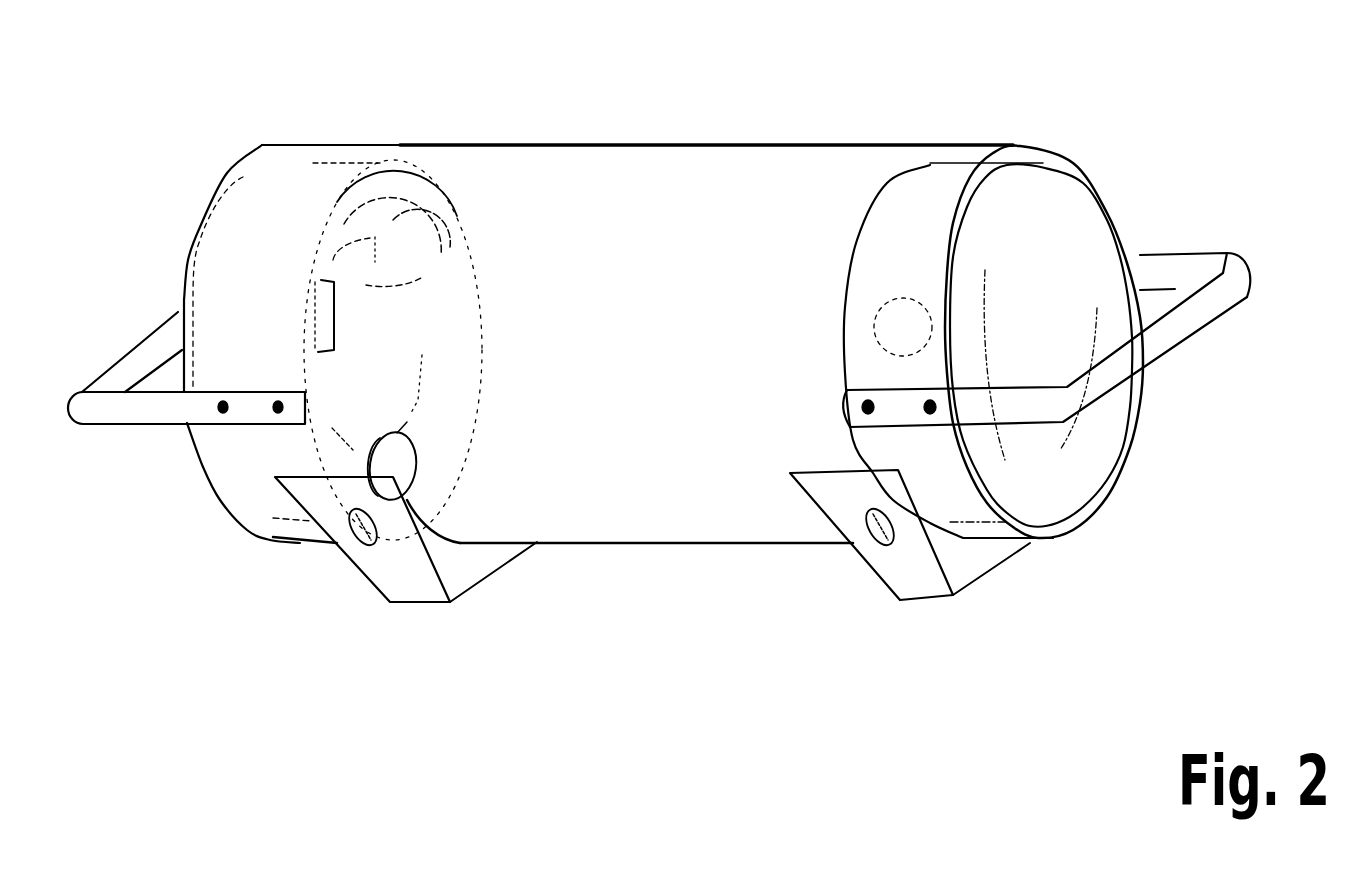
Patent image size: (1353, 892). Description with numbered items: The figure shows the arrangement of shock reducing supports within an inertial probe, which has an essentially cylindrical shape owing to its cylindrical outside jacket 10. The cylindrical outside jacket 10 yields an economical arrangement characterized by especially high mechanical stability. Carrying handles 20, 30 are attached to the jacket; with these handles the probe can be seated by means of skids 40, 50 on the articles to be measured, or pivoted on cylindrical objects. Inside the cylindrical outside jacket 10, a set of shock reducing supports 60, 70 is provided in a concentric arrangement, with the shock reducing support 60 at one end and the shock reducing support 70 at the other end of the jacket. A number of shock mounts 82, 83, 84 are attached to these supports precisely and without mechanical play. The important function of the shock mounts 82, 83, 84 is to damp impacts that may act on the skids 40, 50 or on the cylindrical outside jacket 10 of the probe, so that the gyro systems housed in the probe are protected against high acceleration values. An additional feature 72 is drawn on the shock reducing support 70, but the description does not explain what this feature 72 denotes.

The cylindrical outside jacket 10 is at (307, 145).
The carrying handle 20 is at (118, 358).
The carrying handle 30 is at (1200, 247).
The skid 40 is at (422, 607).
The skid 50 is at (930, 607).
The shock reducing support 60 is at (308, 523).
The shock reducing support 70 is at (980, 523).
The opening in end cap 72 is at (872, 323).
The shock mount 82 is at (337, 334).
The shock mount 83 is at (458, 241).
The shock mount 84 is at (420, 470).